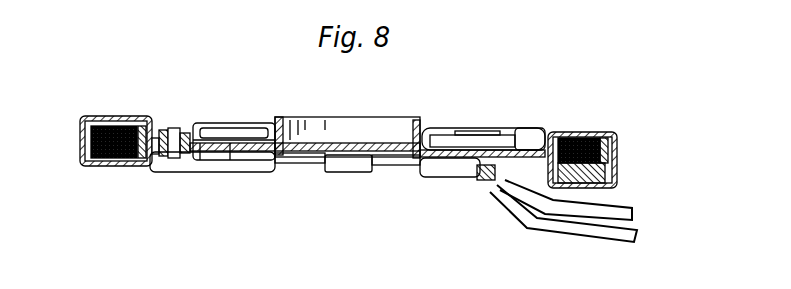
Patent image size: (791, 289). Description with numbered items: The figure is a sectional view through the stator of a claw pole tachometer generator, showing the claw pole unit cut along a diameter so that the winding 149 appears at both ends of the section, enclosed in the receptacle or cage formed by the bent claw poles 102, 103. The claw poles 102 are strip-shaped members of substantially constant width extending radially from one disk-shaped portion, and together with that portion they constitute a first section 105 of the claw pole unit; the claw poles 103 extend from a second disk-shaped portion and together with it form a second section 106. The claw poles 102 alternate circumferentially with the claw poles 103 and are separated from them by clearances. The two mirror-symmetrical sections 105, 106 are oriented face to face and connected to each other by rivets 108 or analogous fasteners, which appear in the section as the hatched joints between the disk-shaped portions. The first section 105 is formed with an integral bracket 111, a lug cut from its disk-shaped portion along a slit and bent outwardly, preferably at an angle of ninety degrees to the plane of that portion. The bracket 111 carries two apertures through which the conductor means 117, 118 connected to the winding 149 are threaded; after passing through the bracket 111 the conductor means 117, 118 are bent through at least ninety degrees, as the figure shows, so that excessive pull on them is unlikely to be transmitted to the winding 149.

The claw poles 102 is at (81, 150).
The claw poles 103 is at (617, 148).
The first section 105 is at (242, 142).
The second section 106 is at (535, 150).
The rivets 108 is at (163, 136).
The bracket 111 is at (488, 190).
The conductor means 117 is at (637, 236).
The conductor means 118 is at (632, 209).
The winding 149 is at (118, 128).